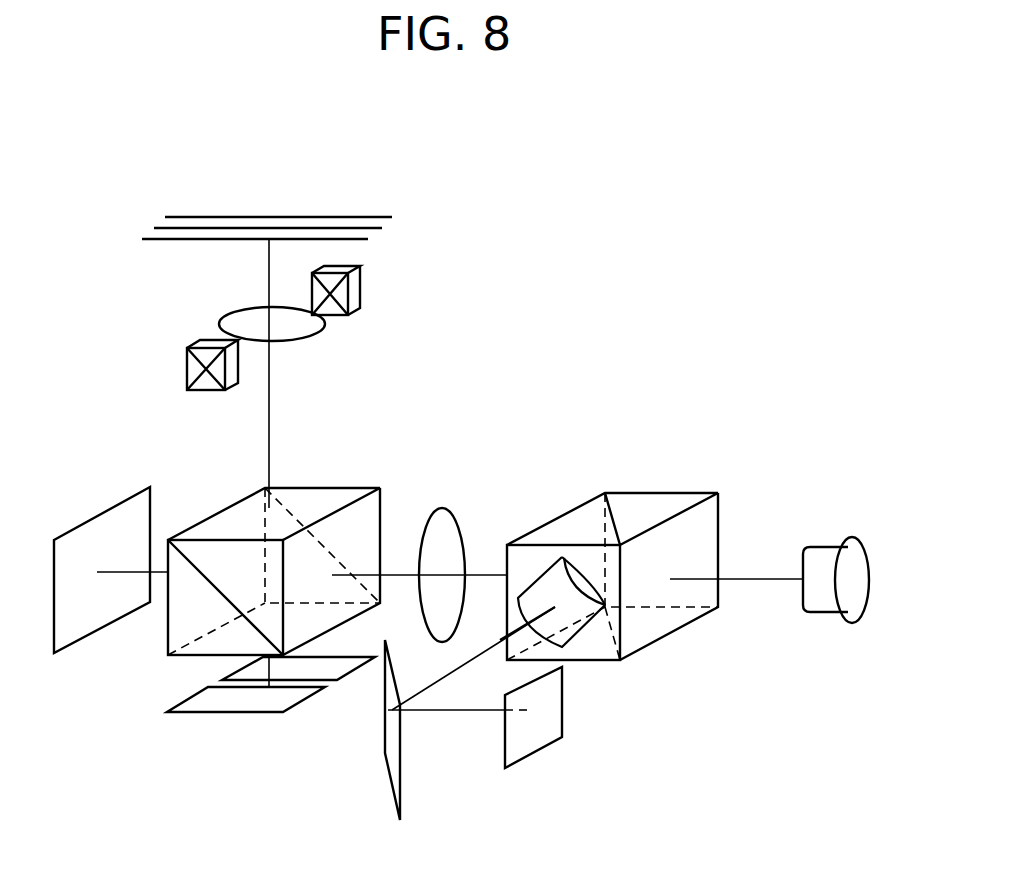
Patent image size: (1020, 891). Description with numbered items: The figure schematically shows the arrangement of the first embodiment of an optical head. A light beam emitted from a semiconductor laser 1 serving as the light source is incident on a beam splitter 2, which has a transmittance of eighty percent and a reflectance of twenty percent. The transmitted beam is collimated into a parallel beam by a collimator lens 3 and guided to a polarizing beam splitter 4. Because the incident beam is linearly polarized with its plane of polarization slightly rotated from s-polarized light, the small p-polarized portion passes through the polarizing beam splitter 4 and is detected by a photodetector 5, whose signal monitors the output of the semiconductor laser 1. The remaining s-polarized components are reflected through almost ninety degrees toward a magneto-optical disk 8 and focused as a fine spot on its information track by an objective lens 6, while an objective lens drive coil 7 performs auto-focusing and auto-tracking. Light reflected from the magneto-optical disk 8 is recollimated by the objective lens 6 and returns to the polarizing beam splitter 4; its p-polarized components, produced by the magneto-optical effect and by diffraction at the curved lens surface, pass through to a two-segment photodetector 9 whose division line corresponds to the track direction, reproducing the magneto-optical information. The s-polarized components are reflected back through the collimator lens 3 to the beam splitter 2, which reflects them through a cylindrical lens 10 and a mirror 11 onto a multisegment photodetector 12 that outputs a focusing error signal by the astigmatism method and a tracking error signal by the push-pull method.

The semiconductor laser 1 is at (852, 540).
The beam splitter 2 is at (572, 505).
The collimator lens 3 is at (452, 508).
The polarizing beam splitter 4 is at (342, 487).
The photodetector 5 is at (99, 520).
The objective lens 6 is at (325, 329).
The objective lens drive coil 7 is at (363, 284).
The magneto-optical disk 8 is at (358, 217).
The two-segment photodetector 9 is at (316, 690).
The cylindrical lens 10 is at (558, 622).
The mirror 11 is at (390, 772).
The multisegment photodetector 12 is at (530, 750).